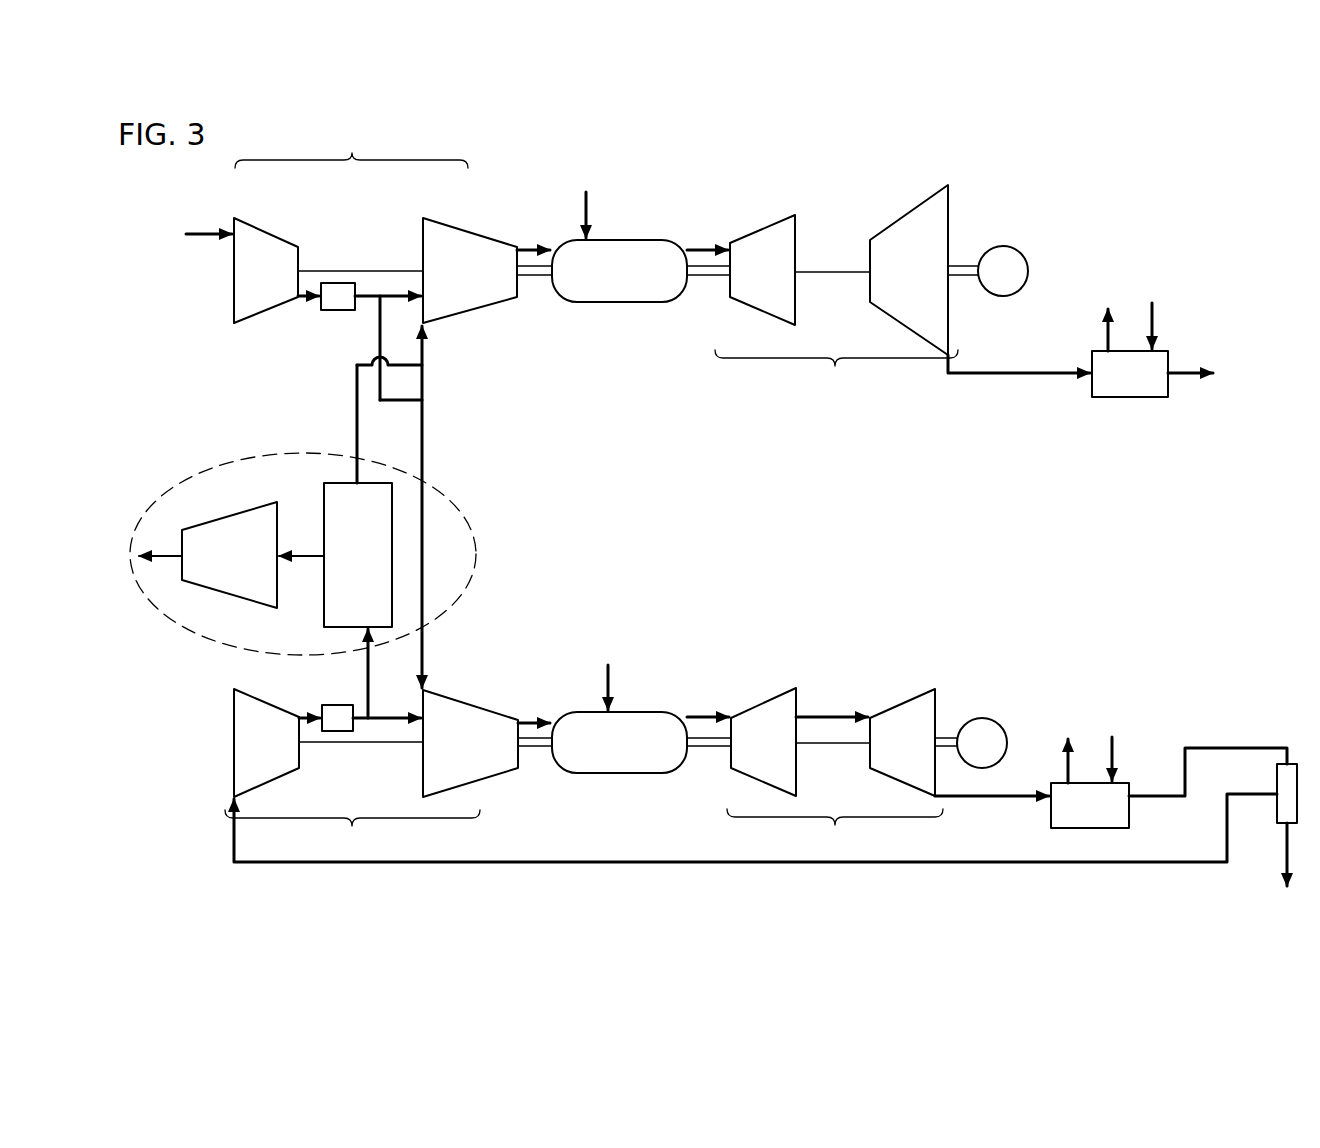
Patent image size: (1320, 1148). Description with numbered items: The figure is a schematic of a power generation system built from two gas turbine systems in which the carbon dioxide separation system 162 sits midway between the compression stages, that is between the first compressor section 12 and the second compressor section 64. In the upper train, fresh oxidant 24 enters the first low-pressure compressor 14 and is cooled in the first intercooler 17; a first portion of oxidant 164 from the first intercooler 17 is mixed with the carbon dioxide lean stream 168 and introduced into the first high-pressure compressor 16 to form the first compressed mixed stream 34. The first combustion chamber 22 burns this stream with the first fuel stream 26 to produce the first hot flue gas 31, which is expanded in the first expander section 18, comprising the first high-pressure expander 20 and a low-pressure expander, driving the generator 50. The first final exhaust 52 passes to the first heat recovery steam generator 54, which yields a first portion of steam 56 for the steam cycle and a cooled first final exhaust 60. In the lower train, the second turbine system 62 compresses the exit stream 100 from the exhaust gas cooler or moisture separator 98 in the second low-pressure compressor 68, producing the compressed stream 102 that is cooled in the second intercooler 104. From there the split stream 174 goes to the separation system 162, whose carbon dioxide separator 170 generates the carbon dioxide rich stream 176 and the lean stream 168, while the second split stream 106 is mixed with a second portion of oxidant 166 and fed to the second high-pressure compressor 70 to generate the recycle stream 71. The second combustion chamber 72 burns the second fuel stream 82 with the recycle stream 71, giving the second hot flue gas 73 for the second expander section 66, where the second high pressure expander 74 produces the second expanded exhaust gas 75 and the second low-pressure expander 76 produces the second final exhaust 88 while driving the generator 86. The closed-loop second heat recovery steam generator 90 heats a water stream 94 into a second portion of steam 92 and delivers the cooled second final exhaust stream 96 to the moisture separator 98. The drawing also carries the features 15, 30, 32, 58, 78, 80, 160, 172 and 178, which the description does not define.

The first compressor section 12 is at (351, 148).
The first low-pressure compressor 14 is at (266, 232).
The intercooler inlet flow 15 is at (304, 302).
The first high-pressure compressor 16 is at (424, 218).
The first intercooler 17 is at (334, 312).
The first expander section 18 is at (836, 334).
The first high-pressure expander 20 is at (758, 303).
The first combustion chamber 22 is at (641, 239).
The oxidant 24 is at (204, 232).
The first fuel stream 26 is at (588, 208).
The first low pressure shaft 30 is at (322, 268).
The first hot flue gas 31 is at (699, 246).
The first high pressure shaft 32 is at (530, 278).
The first compressed mixed stream 34 is at (527, 246).
The generator 50 is at (1027, 264).
The first final exhaust 52 is at (975, 376).
The first heat recovery steam generator 54 is at (1130, 398).
The first portion of steam 56 is at (1104, 333).
The feedwater inlet from steam cycle 58 is at (1155, 322).
The cooled first final exhaust 60 is at (1188, 376).
The second turbine system 62 is at (589, 879).
The second compressor section 64 is at (352, 833).
The second expander section 66 is at (835, 833).
The second low-pressure compressor 68 is at (232, 736).
The second high-pressure compressor 70 is at (487, 701).
The recycle stream 71 is at (530, 718).
The second combustion chamber 72 is at (641, 711).
The second hot flue gas 73 is at (701, 712).
The second high pressure expander 74 is at (765, 695).
The second expanded exhaust gas 75 is at (829, 712).
The second low-pressure expander 76 is at (905, 695).
The second intercooler / turbine shaft 78 is at (833, 748).
The second high pressure shaft 80 is at (533, 749).
The second fuel stream 82 is at (604, 683).
The generator 86 is at (984, 717).
The second final exhaust 88 is at (987, 799).
The second heat recovery steam generator 90 is at (1090, 829).
The second portion of steam 92 is at (1064, 765).
The water stream 94 is at (1116, 767).
The cooled second final exhaust stream 96 is at (1228, 744).
The exhaust gas cooler or moisture separator 98 is at (1290, 762).
The exit stream 100 is at (973, 865).
The compressed stream 102 is at (308, 712).
The second intercooler 104 is at (336, 733).
The second split stream 106 is at (390, 743).
The combined cycle power plant system 160 is at (1112, 150).
The carbon dioxide separation system 162 is at (476, 536).
The first portion of oxidant 164 is at (366, 302).
The second portion of oxidant 166 is at (424, 447).
The carbon dioxide lean stream 168 is at (356, 442).
The carbon dioxide separator 170 is at (392, 565).
The CO2 compressor 172 is at (232, 515).
The split stream 174 is at (370, 672).
The carbon dioxide rich stream 176 is at (314, 551).
The compressed CO2 outlet flow 178 is at (174, 553).